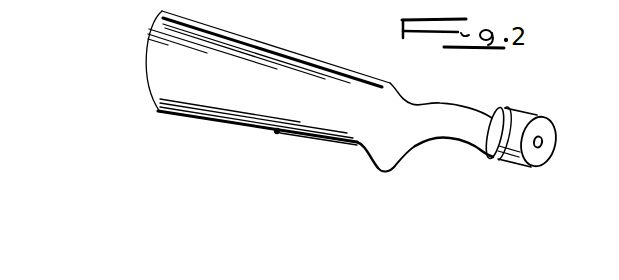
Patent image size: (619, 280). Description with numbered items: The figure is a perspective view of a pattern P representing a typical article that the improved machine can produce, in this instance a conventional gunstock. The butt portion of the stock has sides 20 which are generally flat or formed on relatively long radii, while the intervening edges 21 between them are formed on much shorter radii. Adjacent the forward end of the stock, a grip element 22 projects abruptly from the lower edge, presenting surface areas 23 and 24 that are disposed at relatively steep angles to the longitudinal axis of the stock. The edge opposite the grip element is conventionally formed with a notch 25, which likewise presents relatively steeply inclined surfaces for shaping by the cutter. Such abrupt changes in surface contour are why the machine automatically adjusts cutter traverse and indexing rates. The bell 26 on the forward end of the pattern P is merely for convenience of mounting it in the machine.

The sides 20 is at (192, 96).
The edges 21 is at (241, 37).
The grip element 22 is at (390, 163).
The surface area 23 is at (405, 162).
The surface area 24 is at (370, 157).
The notch 25 is at (425, 104).
The bell 26 is at (520, 116).
The pattern P is at (277, 132).